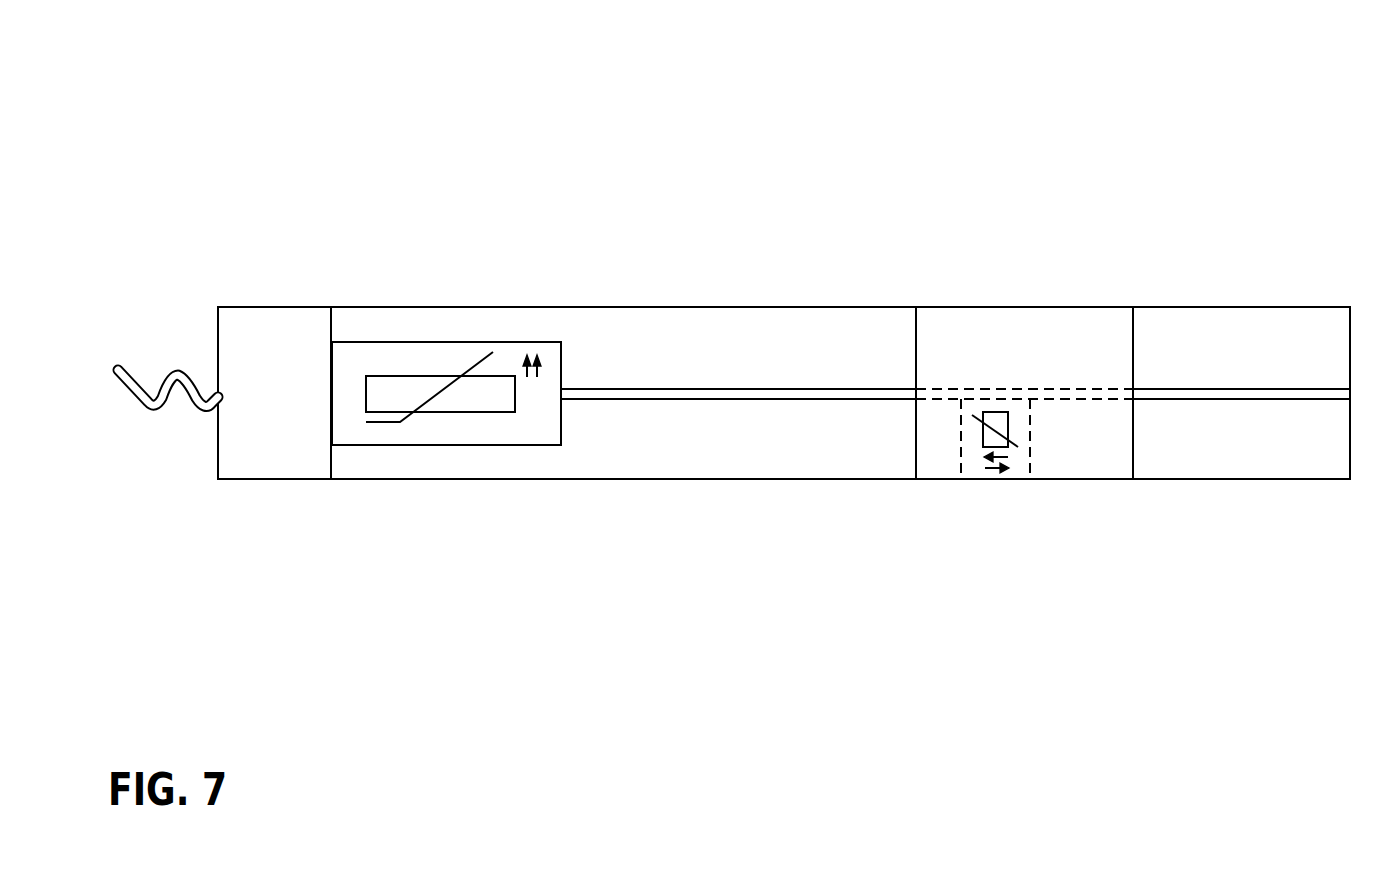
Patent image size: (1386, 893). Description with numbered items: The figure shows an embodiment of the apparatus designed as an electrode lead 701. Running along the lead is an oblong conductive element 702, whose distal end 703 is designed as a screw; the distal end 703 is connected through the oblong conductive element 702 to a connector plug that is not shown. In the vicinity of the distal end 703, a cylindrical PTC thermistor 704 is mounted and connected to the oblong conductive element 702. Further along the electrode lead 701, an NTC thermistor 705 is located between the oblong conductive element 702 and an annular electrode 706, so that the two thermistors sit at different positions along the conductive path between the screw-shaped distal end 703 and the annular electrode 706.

The electrode lead 701 is at (1362, 147).
The oblong conductive element 702 is at (755, 389).
The distal end 703 is at (160, 412).
The cylindrical PTC thermistor 704 is at (527, 342).
The NTC thermistor 705 is at (960, 457).
The annular electrode 706 is at (1110, 307).